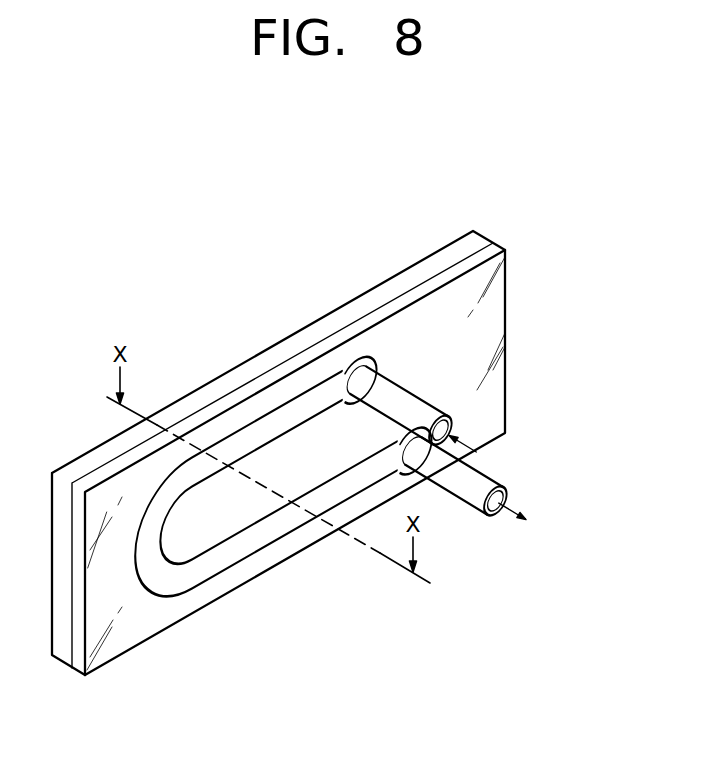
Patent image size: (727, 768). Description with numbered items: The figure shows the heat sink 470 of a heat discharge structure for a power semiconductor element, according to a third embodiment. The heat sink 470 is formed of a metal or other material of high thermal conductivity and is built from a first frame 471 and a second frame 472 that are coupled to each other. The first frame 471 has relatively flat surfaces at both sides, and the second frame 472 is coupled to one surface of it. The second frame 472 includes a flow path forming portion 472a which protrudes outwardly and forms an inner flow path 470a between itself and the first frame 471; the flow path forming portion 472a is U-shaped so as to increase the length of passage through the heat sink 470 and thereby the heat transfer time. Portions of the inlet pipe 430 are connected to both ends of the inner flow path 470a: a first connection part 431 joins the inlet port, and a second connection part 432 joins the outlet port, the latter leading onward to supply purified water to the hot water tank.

The heat sink 470 is at (307, 404).
The first frame 471 is at (477, 237).
The second frame 472 is at (490, 246).
The inner flow path 470a is at (268, 526).
The flow path forming portion 472a is at (228, 565).
The inlet pipe 430 is at (495, 437).
The first connection part 431 is at (413, 401).
The second connection part 432 is at (477, 489).